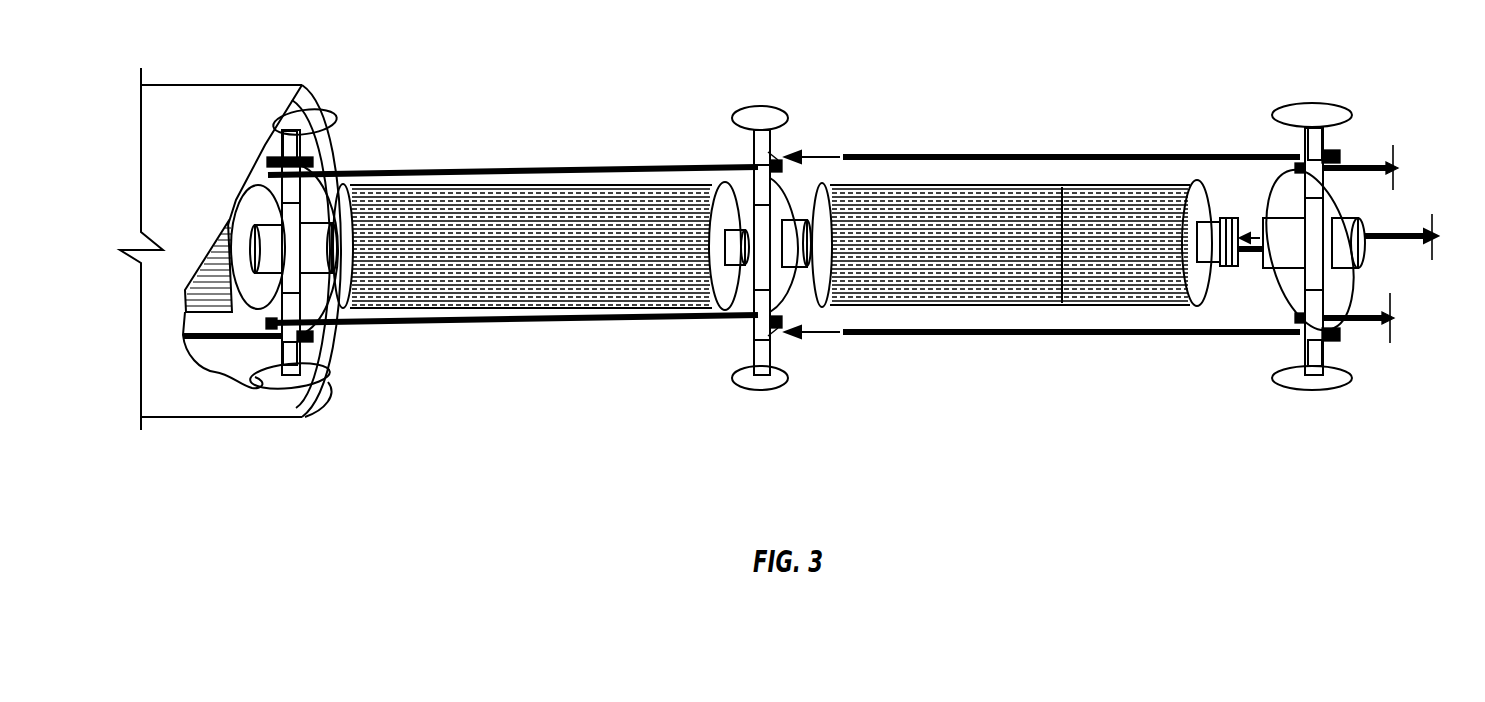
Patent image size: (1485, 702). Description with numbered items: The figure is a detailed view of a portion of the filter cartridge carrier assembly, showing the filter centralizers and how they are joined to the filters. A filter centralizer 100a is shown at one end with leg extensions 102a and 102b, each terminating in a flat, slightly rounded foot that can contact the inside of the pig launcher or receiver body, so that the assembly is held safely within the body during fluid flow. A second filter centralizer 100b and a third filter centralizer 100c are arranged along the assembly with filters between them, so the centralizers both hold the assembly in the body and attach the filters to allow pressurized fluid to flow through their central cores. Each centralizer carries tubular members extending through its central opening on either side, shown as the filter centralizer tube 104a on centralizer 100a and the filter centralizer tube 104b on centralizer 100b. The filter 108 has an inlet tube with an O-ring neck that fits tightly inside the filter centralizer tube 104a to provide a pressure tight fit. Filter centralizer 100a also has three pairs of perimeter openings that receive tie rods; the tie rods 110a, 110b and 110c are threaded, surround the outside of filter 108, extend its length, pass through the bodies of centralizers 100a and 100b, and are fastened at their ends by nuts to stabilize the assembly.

The filter centralizer 100a is at (1303, 207).
The filter centralizer 100b is at (752, 150).
The filter centralizer 100c is at (318, 210).
The leg extension 102a is at (1316, 380).
The leg extension 102b is at (1316, 112).
The filter centralizer tube 104a is at (1373, 226).
The filter centralizer tube 104b is at (752, 160).
The filter 108 is at (917, 187).
The tie rod 110a is at (1158, 338).
The tie rod 110b is at (1245, 258).
The tie rod 110c is at (1158, 150).